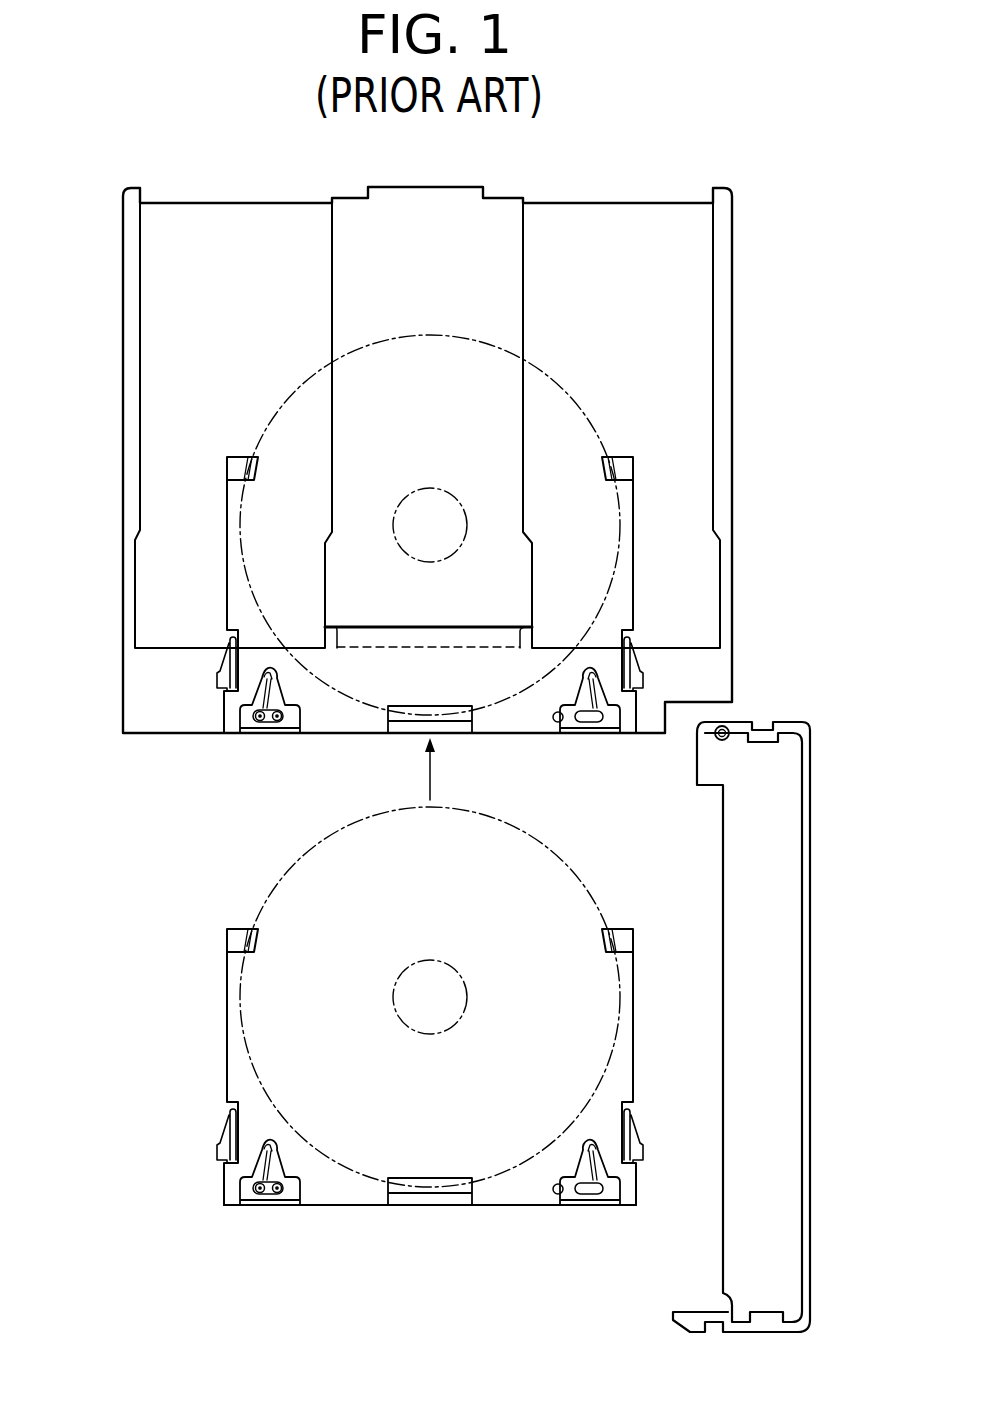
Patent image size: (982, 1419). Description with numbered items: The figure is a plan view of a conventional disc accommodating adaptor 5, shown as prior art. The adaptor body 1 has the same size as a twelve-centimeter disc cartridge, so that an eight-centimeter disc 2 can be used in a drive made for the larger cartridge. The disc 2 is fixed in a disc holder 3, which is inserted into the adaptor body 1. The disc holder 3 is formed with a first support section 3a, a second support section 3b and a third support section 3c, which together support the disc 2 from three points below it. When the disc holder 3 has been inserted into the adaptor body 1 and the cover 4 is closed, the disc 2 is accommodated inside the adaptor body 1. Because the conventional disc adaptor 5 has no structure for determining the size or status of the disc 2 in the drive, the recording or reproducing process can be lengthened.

The adaptor body 1 is at (116, 288).
The disc 2 is at (300, 859).
The disc holder 3 is at (220, 1184).
The first support section 3a is at (228, 942).
The second support section 3b is at (601, 930).
The third support section 3c is at (432, 1184).
The cover 4 is at (815, 980).
The conventional disc adaptor 5 is at (58, 637).